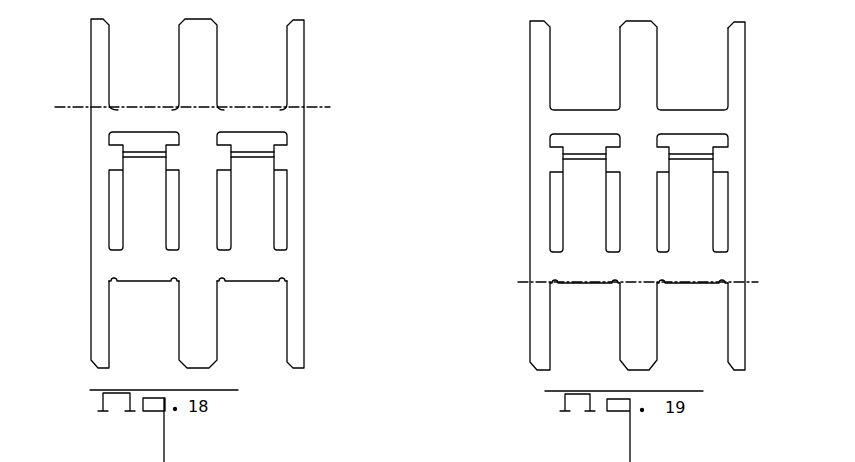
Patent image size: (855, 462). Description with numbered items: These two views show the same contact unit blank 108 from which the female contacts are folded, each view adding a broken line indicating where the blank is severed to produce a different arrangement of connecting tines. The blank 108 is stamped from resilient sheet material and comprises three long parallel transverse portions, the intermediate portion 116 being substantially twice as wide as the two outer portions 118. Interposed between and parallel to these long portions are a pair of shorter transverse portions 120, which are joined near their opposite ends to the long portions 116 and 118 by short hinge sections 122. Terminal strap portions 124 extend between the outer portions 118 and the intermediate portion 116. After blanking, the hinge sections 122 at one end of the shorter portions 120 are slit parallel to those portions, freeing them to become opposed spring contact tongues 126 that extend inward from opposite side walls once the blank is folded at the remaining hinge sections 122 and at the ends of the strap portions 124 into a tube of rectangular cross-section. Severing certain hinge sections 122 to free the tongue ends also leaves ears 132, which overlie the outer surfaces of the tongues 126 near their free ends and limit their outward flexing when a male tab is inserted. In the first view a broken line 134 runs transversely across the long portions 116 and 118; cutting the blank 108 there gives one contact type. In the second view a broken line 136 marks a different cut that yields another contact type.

In FIG. 18, the contact unit blank 108 is at (315, 205).
In FIG. 19, the contact unit blank 108 is at (755, 212).
In FIG. 18, the intermediate transverse portion 116 is at (207, 62).
In FIG. 19, the intermediate transverse portion 116 is at (650, 68).
In FIG. 18, the outer transverse portions 118 is at (99, 61).
In FIG. 19, the outer transverse portions 118 is at (538, 62).
In FIG. 18, the shorter transverse portions 120 is at (120, 214).
In FIG. 19, the shorter transverse portions 120 is at (560, 224).
In FIG. 18, the short hinge sections 122 is at (125, 268).
In FIG. 19, the short hinge sections 122 is at (568, 266).
In FIG. 18, the terminal strap portions 124 is at (125, 117).
In FIG. 19, the terminal strap portions 124 is at (560, 120).
In FIG. 18, the spring contact tongues 126 is at (142, 165).
In FIG. 19, the spring contact tongues 126 is at (582, 166).
In FIG. 18, the ears 132 is at (110, 158).
In FIG. 19, the ears 132 is at (558, 158).
In FIG. 18, the broken line 134 is at (82, 107).
In FIG. 19, the broken line 136 is at (637, 284).